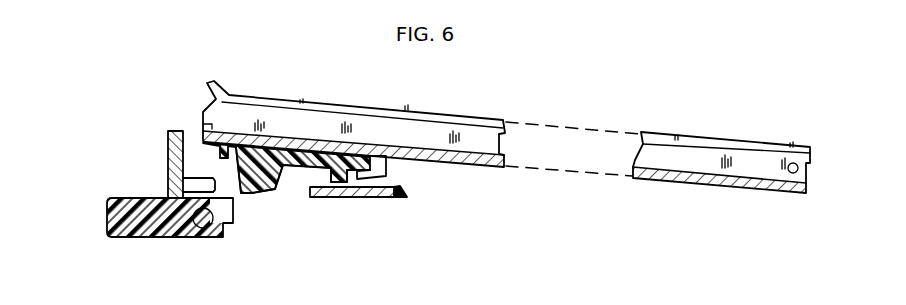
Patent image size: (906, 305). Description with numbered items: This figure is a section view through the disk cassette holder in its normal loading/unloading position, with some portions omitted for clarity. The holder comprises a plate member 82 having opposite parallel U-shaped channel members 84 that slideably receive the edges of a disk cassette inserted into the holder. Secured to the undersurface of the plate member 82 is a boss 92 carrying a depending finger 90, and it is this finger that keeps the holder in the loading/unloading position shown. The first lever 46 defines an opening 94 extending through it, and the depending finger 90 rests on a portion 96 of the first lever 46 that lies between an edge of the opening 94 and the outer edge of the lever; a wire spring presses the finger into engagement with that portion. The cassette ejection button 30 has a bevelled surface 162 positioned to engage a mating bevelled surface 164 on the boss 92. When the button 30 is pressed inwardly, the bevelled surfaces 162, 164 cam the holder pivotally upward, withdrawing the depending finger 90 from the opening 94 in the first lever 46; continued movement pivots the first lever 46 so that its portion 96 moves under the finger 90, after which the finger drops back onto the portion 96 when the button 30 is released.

The cassette ejection button 30 is at (127, 240).
The first lever 46 is at (398, 198).
The plate member 82 is at (482, 164).
The U-shaped channel members 84 is at (483, 128).
The depending finger 90 is at (327, 183).
The boss 92 is at (270, 150).
The opening 94 is at (346, 198).
The portion of first lever 96 is at (333, 198).
The bevelled surface 162 is at (200, 240).
The bevelled surface 164 is at (244, 194).